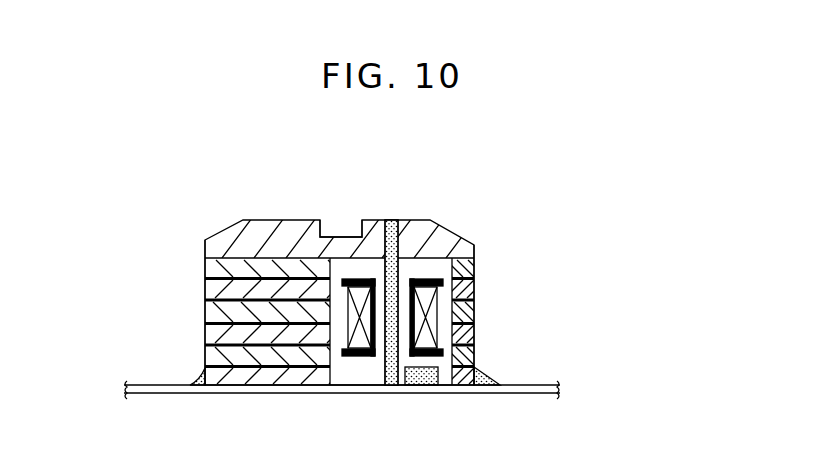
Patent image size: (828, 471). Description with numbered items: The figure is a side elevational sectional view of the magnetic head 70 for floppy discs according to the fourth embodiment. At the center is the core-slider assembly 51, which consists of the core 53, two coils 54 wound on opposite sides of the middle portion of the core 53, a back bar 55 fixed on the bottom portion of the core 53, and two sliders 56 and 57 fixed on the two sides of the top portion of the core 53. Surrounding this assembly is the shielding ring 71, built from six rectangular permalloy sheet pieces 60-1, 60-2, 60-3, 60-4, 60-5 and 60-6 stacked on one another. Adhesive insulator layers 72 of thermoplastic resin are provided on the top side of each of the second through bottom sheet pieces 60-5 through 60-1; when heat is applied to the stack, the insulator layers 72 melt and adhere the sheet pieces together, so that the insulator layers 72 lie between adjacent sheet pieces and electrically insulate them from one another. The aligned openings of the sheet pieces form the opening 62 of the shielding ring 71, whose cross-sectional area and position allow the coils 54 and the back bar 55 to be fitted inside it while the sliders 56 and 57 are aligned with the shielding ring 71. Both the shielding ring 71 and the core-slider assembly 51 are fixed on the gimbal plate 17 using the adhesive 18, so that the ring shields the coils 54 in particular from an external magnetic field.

The gimbal plate 17 is at (228, 394).
The adhesive 18 is at (197, 380).
The core-slider assembly 51 is at (462, 221).
The core 53 is at (395, 222).
The coils 54 is at (346, 327).
The back bar 55 is at (423, 386).
The slider 56 is at (453, 240).
The slider 57 is at (226, 237).
The sheet piece 60-1 is at (475, 372).
The sheet piece 60-2 is at (474, 350).
The sheet piece 60-3 is at (474, 332).
The sheet piece 60-4 is at (474, 308).
The sheet piece 60-5 is at (474, 288).
The sheet piece 60-6 is at (474, 262).
The opening 62 is at (338, 272).
The magnetic head 70 is at (555, 196).
The shielding ring 71 is at (188, 268).
The adhesive insulator layers 72 is at (205, 357).